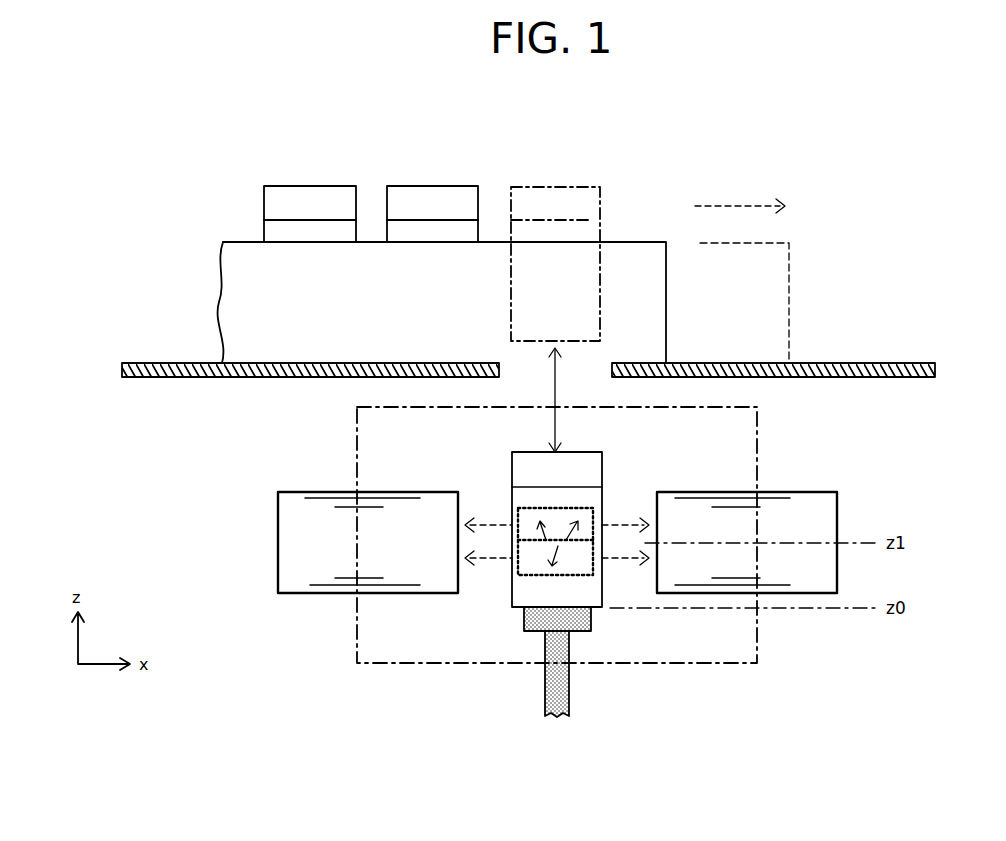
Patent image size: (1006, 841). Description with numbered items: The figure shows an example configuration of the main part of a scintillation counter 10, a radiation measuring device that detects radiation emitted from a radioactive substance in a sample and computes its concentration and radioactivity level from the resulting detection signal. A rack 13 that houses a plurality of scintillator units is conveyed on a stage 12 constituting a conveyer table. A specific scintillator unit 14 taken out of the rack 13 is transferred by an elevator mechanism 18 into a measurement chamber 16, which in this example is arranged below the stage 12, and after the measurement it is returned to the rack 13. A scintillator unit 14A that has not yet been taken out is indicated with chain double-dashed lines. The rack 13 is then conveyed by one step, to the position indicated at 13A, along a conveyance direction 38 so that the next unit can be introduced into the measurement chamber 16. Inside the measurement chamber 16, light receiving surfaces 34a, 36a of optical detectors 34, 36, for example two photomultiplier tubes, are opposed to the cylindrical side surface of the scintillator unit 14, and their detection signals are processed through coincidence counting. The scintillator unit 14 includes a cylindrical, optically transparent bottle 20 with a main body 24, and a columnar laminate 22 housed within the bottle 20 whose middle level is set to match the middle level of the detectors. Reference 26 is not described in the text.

The scintillation counter 10 is at (603, 148).
The stage 12 is at (855, 363).
The rack 13 is at (243, 240).
The rack conveyed by one step 13A is at (792, 294).
The scintillator unit 14 is at (567, 584).
The scintillator unit not yet taken out 14A is at (546, 183).
The measurement chamber 16 is at (758, 446).
The elevator mechanism 18 is at (583, 683).
The bottle 20 is at (536, 439).
The laminate 22 is at (577, 495).
The main body 24 is at (512, 597).
The nozzle upper portion 26 is at (512, 471).
The optical detector 34 is at (372, 523).
The light receiving surface 34a is at (458, 545).
The optical detector 36 is at (753, 521).
The light receiving surface 36a is at (657, 500).
The conveyance direction 38 is at (738, 207).